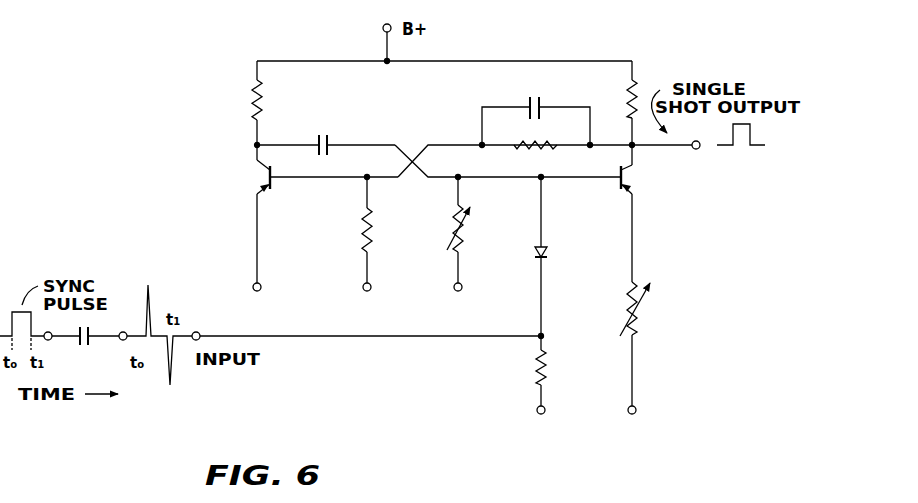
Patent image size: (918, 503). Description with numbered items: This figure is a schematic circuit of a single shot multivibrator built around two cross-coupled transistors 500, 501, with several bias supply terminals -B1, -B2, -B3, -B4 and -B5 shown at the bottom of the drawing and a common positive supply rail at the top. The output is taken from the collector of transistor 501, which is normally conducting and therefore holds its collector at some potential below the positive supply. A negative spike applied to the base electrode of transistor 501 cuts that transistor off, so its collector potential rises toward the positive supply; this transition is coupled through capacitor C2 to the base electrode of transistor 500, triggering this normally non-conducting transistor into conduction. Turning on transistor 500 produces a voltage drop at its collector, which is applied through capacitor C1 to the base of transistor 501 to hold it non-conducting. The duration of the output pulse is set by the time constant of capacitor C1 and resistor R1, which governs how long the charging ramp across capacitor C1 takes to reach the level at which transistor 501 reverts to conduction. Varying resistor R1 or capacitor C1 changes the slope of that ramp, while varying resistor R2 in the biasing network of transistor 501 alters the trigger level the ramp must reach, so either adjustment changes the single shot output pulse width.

The transistor 500 is at (262, 176).
The transistor 501 is at (697, 190).
The capacitor C1 is at (326, 150).
The capacitor C2 is at (539, 117).
The resistor R1 is at (465, 248).
The resistor R2 is at (640, 322).
The bias supply terminal - B1 is at (257, 301).
The bias supply terminal - B2 is at (371, 263).
The bias supply terminal - B3 is at (460, 285).
The bias supply terminal - B4 is at (633, 386).
The bias supply terminal - B5 is at (540, 393).